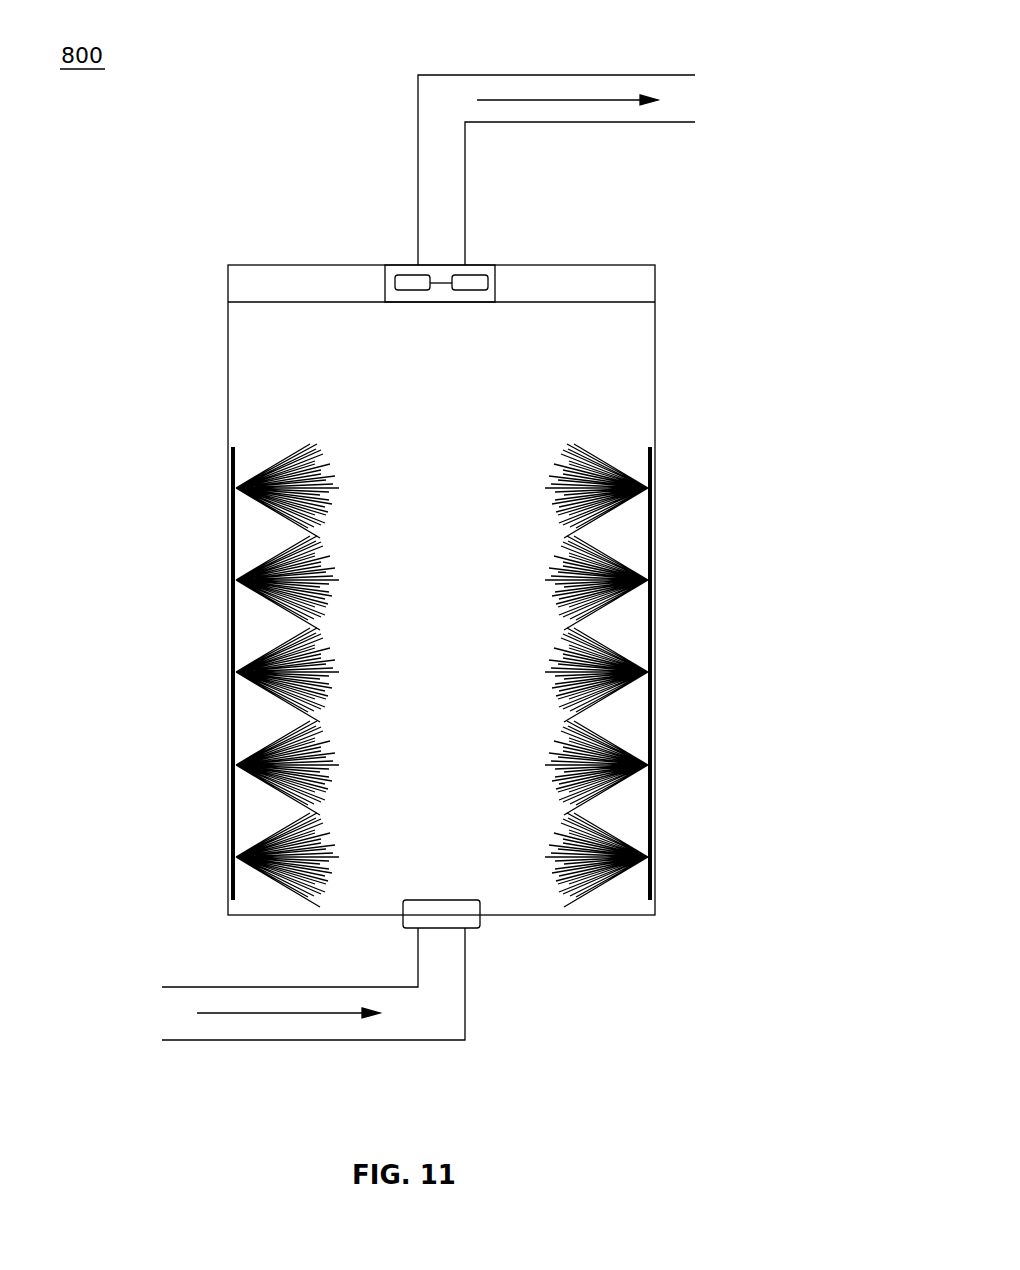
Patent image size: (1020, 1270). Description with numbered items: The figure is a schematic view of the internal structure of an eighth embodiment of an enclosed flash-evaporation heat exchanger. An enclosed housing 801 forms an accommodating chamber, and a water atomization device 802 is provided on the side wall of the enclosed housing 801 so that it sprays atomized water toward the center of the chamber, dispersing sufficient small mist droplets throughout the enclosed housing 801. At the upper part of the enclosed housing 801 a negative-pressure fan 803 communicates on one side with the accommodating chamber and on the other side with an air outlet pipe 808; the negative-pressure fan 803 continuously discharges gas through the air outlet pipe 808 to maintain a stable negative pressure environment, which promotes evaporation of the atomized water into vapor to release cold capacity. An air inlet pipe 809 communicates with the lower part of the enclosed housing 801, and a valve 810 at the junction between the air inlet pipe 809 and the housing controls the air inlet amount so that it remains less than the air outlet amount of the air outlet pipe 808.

The enclosed housing 801 is at (655, 342).
The water atomization device 802 is at (648, 568).
The negative-pressure fan 803 is at (402, 280).
The air outlet pipe 808 is at (538, 88).
The air inlet pipe 809 is at (447, 1023).
The valve 810 is at (453, 917).